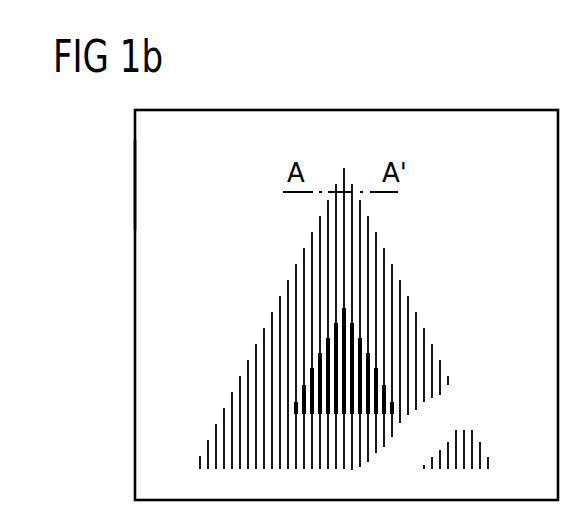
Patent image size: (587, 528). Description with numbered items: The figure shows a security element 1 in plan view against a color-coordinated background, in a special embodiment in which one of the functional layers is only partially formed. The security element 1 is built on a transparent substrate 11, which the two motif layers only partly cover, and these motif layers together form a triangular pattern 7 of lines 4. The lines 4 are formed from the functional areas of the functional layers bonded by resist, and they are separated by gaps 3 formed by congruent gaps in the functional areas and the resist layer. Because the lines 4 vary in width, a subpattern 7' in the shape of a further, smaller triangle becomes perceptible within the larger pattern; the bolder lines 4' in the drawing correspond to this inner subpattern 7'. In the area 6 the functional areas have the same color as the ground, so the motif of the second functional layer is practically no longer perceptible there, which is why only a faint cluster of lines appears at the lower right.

The security element 1 is at (124, 327).
The transparent substrate 11 is at (152, 180).
The triangular pattern 7 is at (324, 319).
The subpattern 7' is at (301, 347).
The gaps 3 is at (404, 300).
The lines 4 is at (437, 354).
The line spacing of inner pattern 4' is at (420, 409).
The area 6 is at (458, 426).